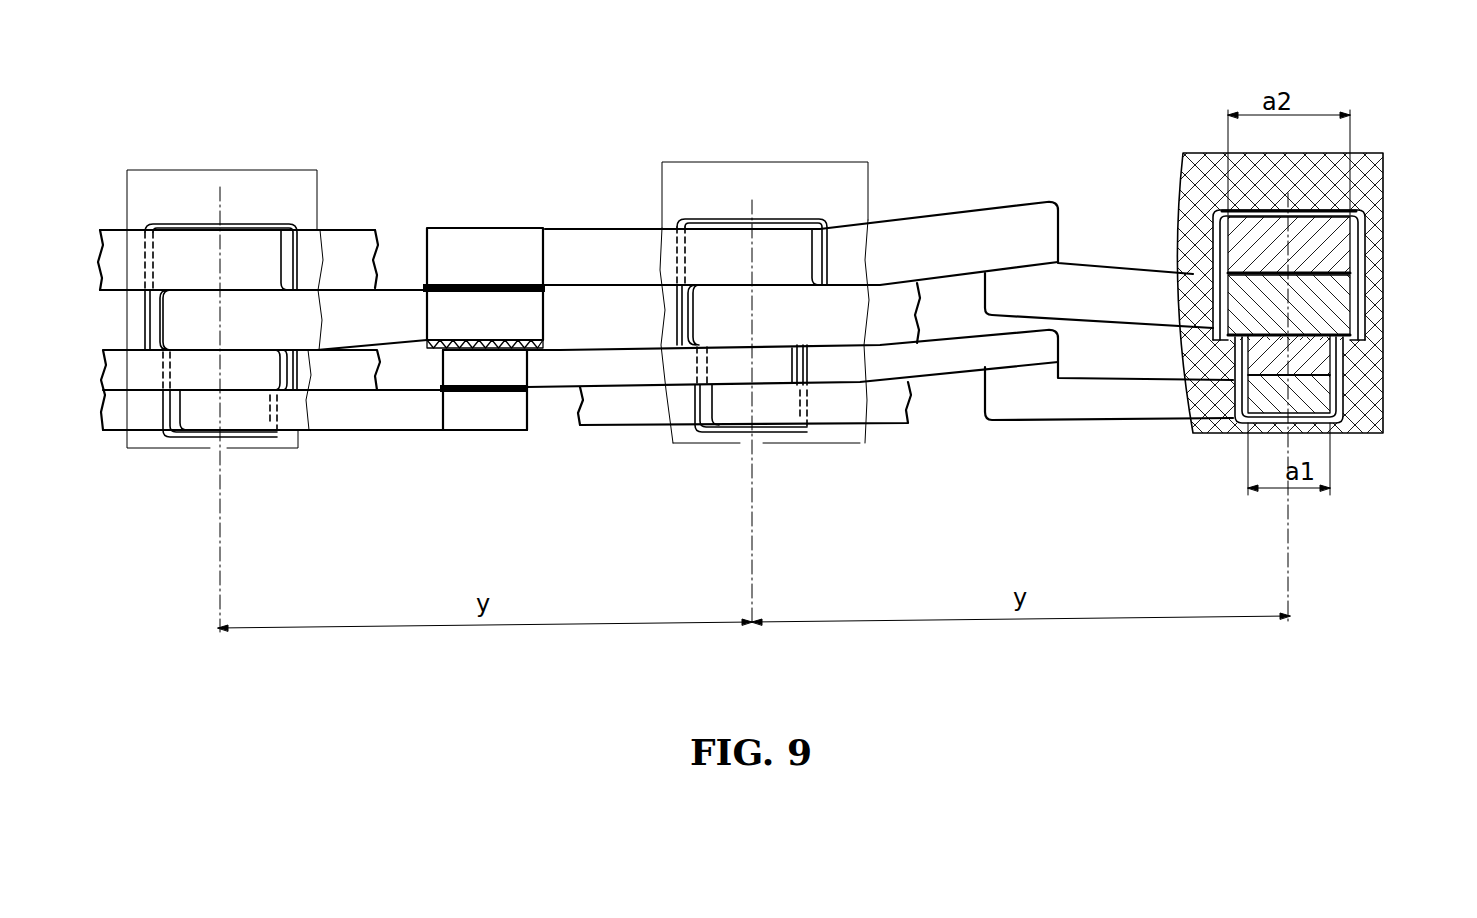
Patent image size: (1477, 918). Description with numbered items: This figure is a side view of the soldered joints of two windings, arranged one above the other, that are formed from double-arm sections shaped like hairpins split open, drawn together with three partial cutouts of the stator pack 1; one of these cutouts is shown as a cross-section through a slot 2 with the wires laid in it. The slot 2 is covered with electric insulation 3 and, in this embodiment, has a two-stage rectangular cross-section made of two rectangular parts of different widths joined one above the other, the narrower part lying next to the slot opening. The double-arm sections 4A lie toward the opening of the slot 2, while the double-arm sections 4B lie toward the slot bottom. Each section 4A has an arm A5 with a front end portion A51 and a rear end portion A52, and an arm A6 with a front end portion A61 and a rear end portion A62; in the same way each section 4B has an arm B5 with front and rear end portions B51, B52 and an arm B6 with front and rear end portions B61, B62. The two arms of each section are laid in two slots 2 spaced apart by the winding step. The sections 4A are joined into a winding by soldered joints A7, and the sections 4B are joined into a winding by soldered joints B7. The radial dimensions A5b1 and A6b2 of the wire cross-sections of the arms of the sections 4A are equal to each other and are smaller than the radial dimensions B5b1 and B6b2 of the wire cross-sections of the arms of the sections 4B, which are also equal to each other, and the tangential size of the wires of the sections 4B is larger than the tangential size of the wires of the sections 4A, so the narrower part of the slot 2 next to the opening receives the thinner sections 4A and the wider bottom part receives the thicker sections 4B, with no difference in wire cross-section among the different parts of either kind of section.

The stator pack 1 is at (1367, 178).
The slot 2 is at (1305, 205).
The electric insulation 3 is at (1267, 210).
The double-arm sections lying to the slot opening 4A is at (1003, 435).
The double-arm sections lying to the slot bottom 4B is at (1015, 185).
The arm of section 4A adjacent the opening A5 is at (1280, 400).
The arm of section 4A at the slot bottom side A6 is at (1243, 386).
The soldered joints of sections 4A A7 is at (485, 392).
The front end portion of arm A5 A51 is at (318, 415).
The rear end portion of arm A5 A52 is at (639, 407).
The front end portion of arm A6 A61 is at (544, 368).
The rear end portion of arm A6 A62 is at (335, 370).
The arm of section 4B adjacent the opening side B5 is at (1253, 318).
The arm of section 4B at the slot bottom B6 is at (1243, 227).
The soldered joints of sections 4B B7 is at (492, 283).
The front end portion of arm B5 B51 is at (397, 318).
The rear end portion of arm B5 B52 is at (575, 317).
The front end portion of arm B6 B61 is at (643, 258).
The rear end portion of arm B6 B62 is at (348, 258).
The radial dimension of arm B6 wire cross-section B6b2 is at (1383, 215).
The radial dimension of arm B5 wire cross-section B5b1 is at (1383, 337).
The radial dimension of arm A6 wire cross-section A6b2 is at (1383, 373).
The radial dimension of arm A5 wire cross-section A5b1 is at (1383, 410).